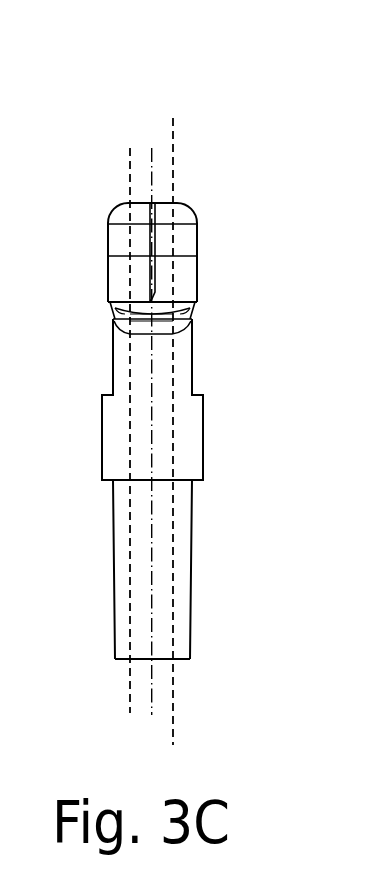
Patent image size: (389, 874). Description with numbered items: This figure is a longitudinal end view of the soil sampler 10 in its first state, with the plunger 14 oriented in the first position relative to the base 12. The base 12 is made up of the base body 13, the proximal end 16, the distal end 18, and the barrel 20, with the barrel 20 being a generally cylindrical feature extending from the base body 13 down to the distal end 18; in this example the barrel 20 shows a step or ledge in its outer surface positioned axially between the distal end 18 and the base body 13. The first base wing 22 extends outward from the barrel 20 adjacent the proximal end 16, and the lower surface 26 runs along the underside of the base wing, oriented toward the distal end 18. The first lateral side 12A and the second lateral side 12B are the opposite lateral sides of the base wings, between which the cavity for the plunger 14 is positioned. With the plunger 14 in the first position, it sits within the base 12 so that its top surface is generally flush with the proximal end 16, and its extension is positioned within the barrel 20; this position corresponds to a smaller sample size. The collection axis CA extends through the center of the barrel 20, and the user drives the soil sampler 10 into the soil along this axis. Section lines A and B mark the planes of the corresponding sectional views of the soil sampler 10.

The soil sampler 10 is at (236, 98).
The base 12 is at (204, 452).
The first lateral side 12A is at (106, 277).
The second lateral side 12B is at (198, 276).
The base body 13 is at (100, 243).
The plunger 14 is at (189, 203).
The proximal end 16 is at (125, 203).
The distal end 18 is at (182, 660).
The barrel 20 is at (180, 538).
The first base wing 22 is at (185, 243).
The lower surface 26 is at (147, 321).
The collection axis CA is at (151, 672).
The section line A is at (130, 713).
The section line B is at (173, 745).